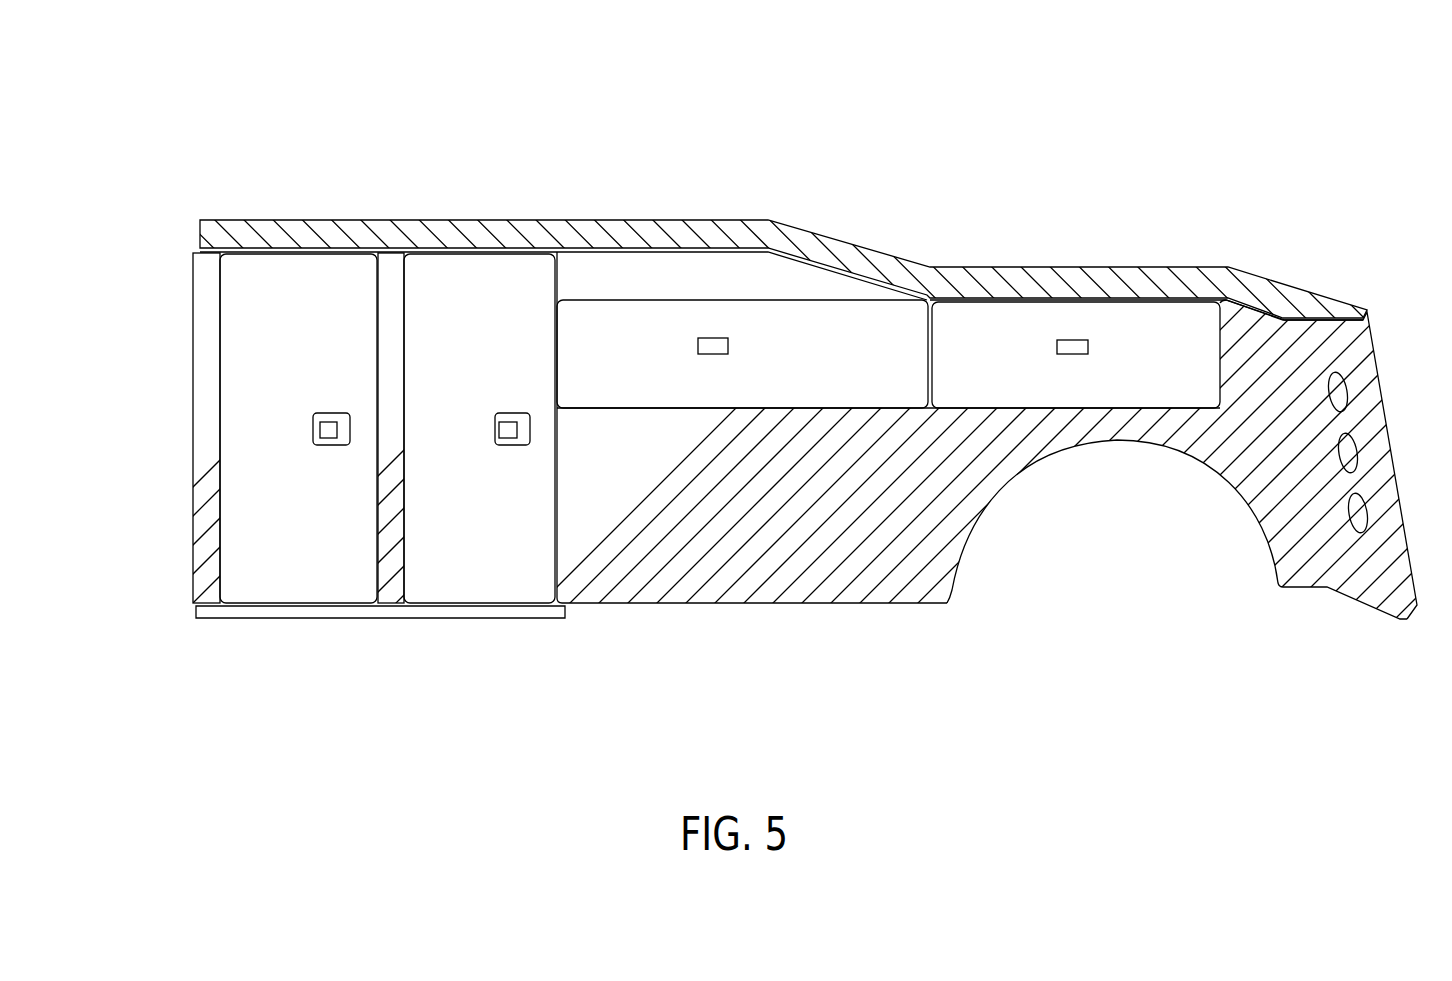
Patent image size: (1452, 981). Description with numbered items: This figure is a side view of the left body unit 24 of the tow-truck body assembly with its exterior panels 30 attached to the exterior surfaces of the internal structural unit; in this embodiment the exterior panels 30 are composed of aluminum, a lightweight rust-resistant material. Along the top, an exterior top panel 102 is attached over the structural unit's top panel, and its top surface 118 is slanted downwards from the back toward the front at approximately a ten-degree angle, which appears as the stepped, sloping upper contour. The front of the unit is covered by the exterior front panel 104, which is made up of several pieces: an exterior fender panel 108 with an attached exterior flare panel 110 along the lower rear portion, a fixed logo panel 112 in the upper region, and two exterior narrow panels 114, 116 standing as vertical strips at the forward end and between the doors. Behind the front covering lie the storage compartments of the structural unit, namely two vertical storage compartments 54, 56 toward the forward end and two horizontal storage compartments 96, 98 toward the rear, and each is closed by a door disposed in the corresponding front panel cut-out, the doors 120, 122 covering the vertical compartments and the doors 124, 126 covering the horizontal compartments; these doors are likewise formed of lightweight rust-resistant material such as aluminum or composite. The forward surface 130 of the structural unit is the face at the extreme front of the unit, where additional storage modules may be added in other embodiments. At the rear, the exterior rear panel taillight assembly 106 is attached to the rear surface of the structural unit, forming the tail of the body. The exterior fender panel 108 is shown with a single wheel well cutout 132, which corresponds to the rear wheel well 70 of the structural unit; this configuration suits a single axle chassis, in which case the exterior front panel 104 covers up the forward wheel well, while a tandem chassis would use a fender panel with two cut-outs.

The exterior panels 30 is at (1128, 172).
The left body unit 24 is at (869, 215).
The exterior top panel 102 is at (462, 217).
The top surface 118 is at (325, 236).
The fixed logo panel 112 is at (693, 283).
The horizontal storage compartment 96 is at (785, 313).
The horizontal storage compartment 98 is at (983, 333).
The door 126 is at (1115, 323).
The exterior rear panel taillight assembly 106 is at (1364, 422).
The door 120 is at (278, 357).
The door 122 is at (500, 572).
The exterior narrow panel 116 is at (394, 596).
The forward surface 130 is at (193, 431).
The exterior narrow panel 114 is at (193, 563).
The vertical storage compartment 54 is at (298, 620).
The vertical storage compartment 56 is at (477, 620).
The door 124 is at (602, 387).
The exterior front panel 104 is at (700, 640).
The exterior fender panel 108 is at (777, 568).
The exterior flare panel 110 is at (903, 602).
The wheel well cutout 132 is at (1031, 478).
The rear wheel well 70 is at (1114, 505).